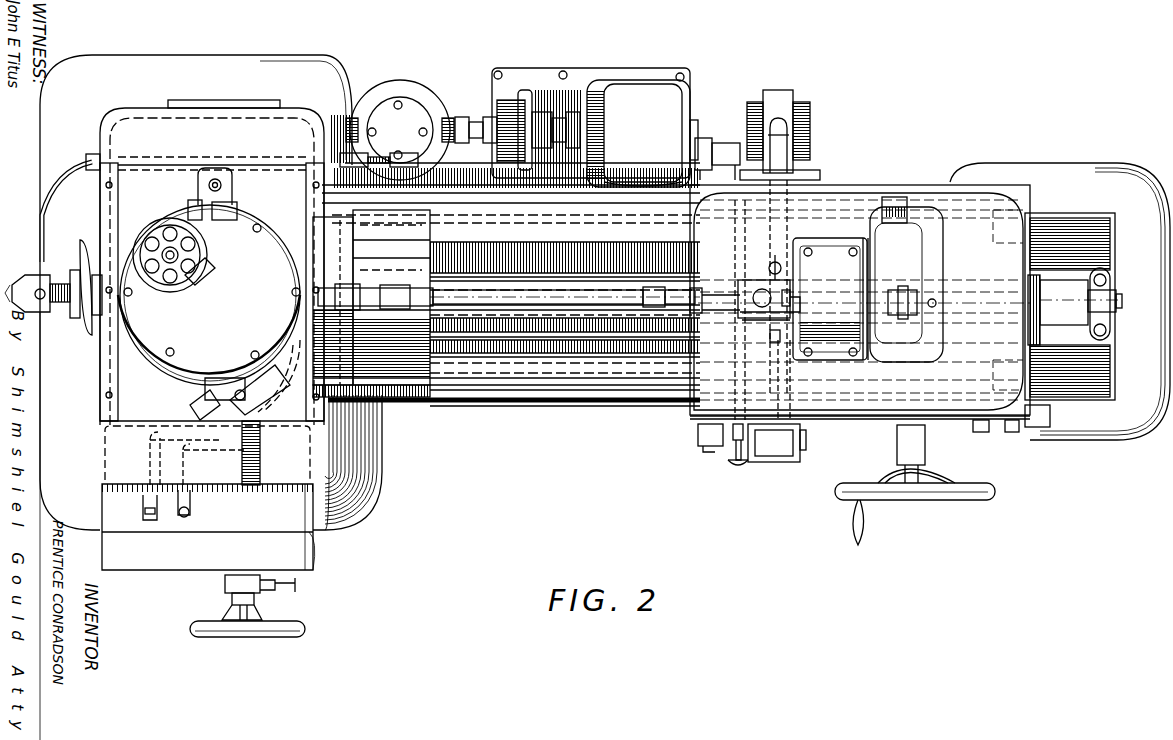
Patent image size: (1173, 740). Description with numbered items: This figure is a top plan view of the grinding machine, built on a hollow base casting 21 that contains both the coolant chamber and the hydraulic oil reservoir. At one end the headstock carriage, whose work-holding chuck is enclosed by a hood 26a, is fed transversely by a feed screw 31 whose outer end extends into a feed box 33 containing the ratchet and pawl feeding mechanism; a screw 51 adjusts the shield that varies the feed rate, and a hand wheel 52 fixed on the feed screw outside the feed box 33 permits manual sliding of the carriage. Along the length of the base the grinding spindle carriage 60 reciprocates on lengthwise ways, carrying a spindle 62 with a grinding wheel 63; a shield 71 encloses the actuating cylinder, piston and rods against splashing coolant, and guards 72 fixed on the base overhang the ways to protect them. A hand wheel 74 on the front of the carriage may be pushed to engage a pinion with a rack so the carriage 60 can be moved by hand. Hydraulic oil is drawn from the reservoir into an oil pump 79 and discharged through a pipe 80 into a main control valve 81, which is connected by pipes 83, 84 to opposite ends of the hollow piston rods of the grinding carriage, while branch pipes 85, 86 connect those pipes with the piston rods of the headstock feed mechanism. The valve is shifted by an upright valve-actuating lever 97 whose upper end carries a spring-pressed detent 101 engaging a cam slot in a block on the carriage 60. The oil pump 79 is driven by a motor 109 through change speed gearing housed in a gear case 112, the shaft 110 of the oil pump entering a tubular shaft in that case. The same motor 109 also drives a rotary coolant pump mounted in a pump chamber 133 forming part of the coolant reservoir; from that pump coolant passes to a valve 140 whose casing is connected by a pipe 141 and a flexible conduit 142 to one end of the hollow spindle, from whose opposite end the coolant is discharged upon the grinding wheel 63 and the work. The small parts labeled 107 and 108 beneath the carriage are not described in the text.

The hollow base casting 21 is at (357, 495).
The hood 26a is at (410, 378).
The feed screw 31 is at (262, 460).
The feed box 33 is at (320, 560).
The screw 51 is at (295, 590).
The hand wheel 52 is at (300, 633).
The grinding spindle carriage 60 is at (907, 237).
The spindle 62 is at (716, 298).
The grinding wheel 63 is at (698, 290).
The shield 71 is at (513, 315).
The guards 72 is at (575, 250).
The hand wheel 74 is at (965, 495).
The oil pump 79 is at (780, 90).
The pipe 80 is at (778, 160).
The main control valve 81 is at (775, 455).
The pipe 83 is at (790, 373).
The pipe 84 is at (760, 367).
The branch pipe 85 is at (143, 495).
The branch pipe 86 is at (193, 497).
The valve-actuating lever 97 is at (705, 446).
The spring-pressed detent 101 is at (740, 468).
The block 107 is at (978, 433).
The block 108 is at (1014, 433).
The motor 109 is at (645, 85).
The shaft of the oil pump 110 is at (730, 140).
The gear case 112 is at (540, 75).
The pump chamber 133 is at (405, 95).
The valve 140 is at (348, 153).
The pipe 141 is at (190, 157).
The flexible conduit 142 is at (63, 160).